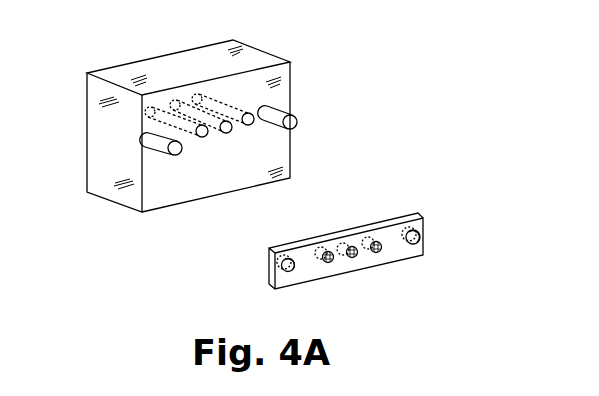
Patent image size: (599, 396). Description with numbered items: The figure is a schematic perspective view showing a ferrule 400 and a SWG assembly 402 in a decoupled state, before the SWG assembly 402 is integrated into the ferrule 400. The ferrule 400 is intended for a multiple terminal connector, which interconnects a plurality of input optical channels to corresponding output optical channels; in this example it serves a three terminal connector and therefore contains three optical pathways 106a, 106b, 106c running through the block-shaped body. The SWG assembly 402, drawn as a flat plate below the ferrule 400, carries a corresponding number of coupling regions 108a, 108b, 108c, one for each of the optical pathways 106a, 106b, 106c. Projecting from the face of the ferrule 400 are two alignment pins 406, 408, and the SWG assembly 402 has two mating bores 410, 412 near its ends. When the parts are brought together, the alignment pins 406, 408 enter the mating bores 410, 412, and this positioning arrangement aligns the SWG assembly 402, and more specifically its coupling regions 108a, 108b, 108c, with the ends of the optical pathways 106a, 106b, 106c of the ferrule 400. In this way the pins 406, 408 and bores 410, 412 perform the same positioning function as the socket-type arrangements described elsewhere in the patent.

The ferrule 400 is at (89, 65).
The SWG assembly 402 is at (424, 262).
The alignment pin 406 is at (162, 147).
The alignment pin 408 is at (289, 115).
The mating bore 410 is at (421, 233).
The mating bore 412 is at (287, 270).
The optical pathway 106a is at (157, 111).
The optical pathway 106b is at (223, 131).
The optical pathway 106c is at (232, 108).
The coupling region 108a is at (330, 251).
The coupling region 108b is at (353, 258).
The coupling region 108c is at (375, 241).